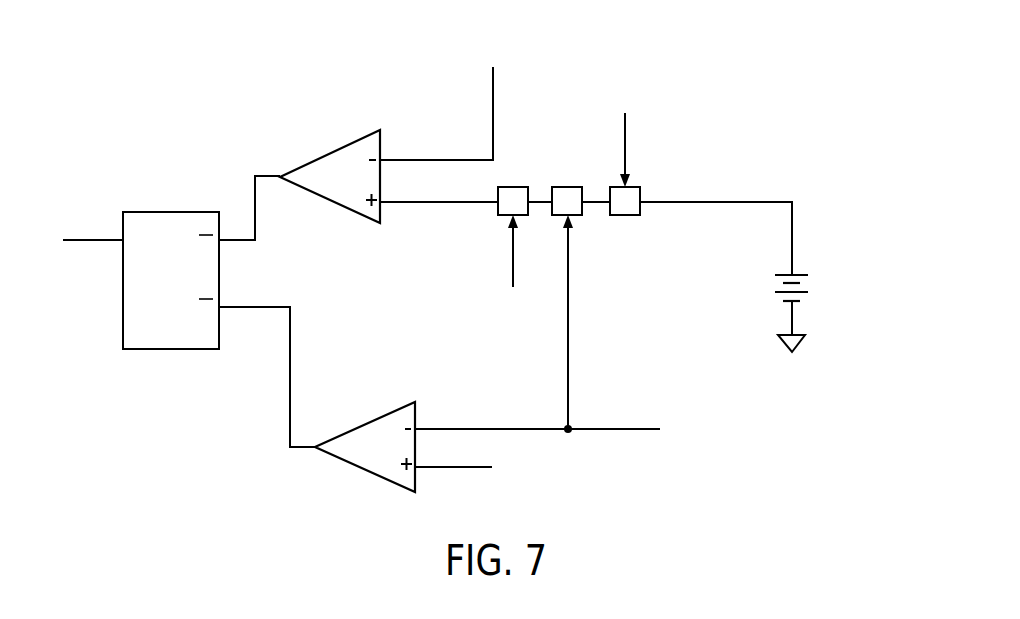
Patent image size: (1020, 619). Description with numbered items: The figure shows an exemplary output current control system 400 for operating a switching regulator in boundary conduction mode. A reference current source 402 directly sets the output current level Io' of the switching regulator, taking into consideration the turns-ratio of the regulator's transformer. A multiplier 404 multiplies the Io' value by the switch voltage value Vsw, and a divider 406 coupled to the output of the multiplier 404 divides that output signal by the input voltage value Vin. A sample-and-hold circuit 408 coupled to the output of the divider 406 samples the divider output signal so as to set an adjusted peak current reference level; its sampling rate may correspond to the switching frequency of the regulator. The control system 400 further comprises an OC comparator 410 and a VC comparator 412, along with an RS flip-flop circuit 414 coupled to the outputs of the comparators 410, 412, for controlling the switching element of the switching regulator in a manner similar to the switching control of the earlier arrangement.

The output current control system 400 is at (737, 52).
The reference current source 402 is at (826, 295).
The multiplier 404 is at (625, 215).
The divider 406 is at (567, 187).
The sample-and-hold circuit 408 is at (513, 187).
The OC comparator 410 is at (317, 196).
The VC comparator 412 is at (360, 472).
The flip-flop 414 is at (122, 303).